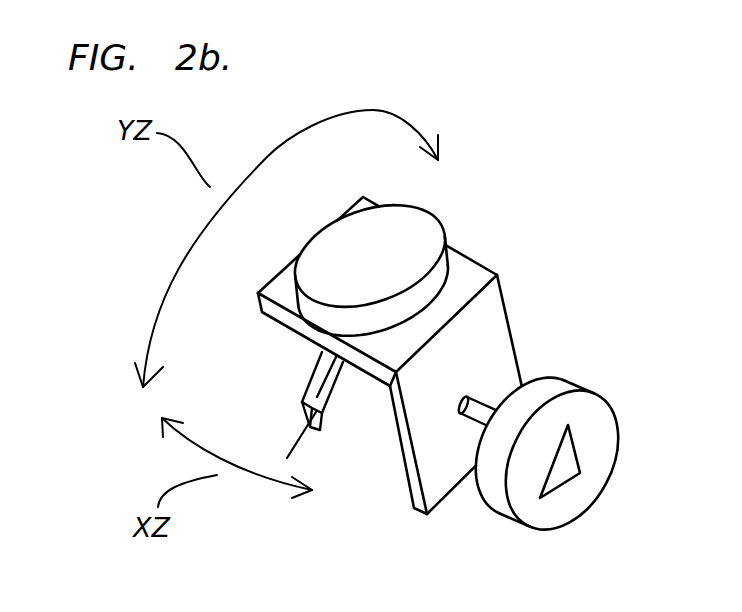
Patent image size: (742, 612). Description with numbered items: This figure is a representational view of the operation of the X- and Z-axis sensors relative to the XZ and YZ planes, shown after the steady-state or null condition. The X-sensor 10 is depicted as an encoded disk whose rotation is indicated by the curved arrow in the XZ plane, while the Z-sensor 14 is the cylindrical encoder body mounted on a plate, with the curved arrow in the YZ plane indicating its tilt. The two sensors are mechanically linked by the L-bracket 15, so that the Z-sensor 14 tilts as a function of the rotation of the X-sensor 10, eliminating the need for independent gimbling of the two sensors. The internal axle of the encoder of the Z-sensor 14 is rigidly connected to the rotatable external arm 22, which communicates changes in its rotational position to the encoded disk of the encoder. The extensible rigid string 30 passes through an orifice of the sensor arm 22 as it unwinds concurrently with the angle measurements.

The X-sensor 10 is at (588, 423).
The Z-sensor 14 is at (412, 233).
The L-bracket 15 is at (495, 307).
The external arm 22 is at (317, 425).
The string 30 is at (290, 440).